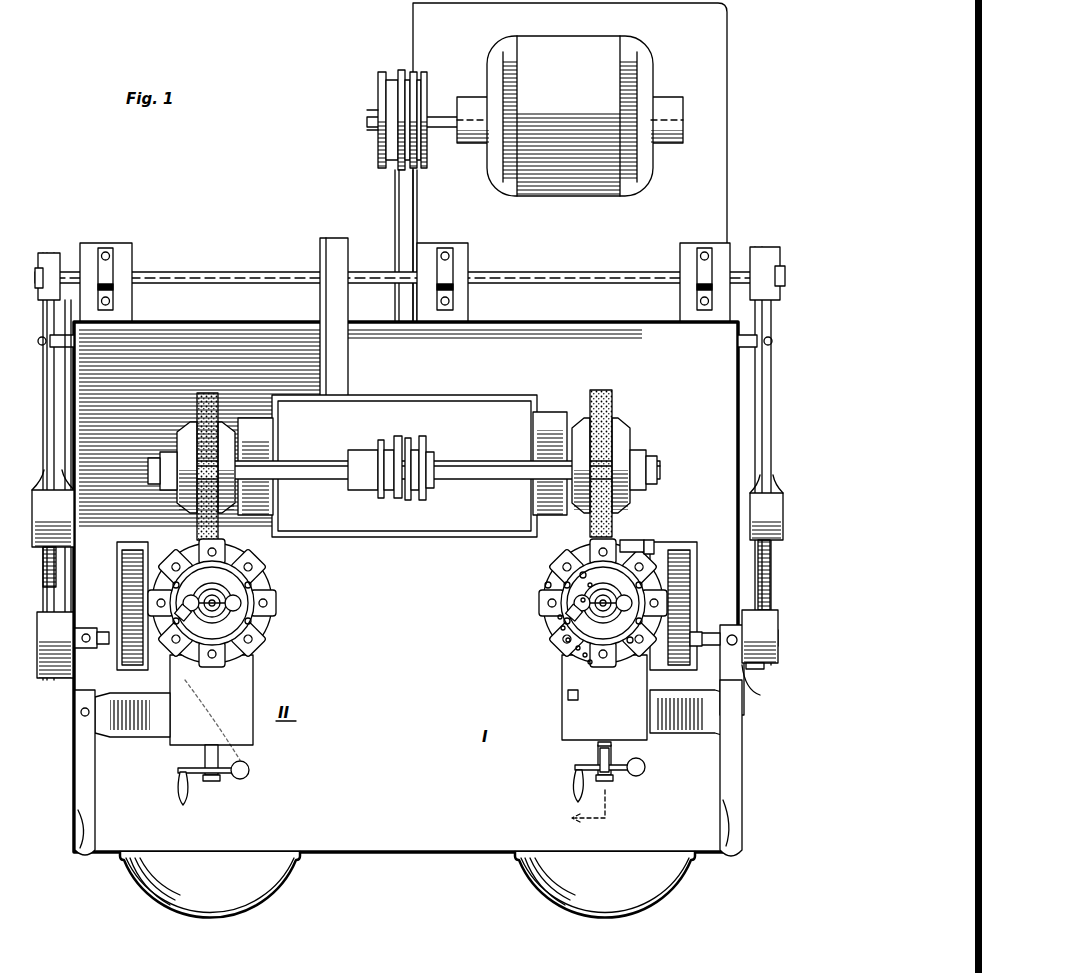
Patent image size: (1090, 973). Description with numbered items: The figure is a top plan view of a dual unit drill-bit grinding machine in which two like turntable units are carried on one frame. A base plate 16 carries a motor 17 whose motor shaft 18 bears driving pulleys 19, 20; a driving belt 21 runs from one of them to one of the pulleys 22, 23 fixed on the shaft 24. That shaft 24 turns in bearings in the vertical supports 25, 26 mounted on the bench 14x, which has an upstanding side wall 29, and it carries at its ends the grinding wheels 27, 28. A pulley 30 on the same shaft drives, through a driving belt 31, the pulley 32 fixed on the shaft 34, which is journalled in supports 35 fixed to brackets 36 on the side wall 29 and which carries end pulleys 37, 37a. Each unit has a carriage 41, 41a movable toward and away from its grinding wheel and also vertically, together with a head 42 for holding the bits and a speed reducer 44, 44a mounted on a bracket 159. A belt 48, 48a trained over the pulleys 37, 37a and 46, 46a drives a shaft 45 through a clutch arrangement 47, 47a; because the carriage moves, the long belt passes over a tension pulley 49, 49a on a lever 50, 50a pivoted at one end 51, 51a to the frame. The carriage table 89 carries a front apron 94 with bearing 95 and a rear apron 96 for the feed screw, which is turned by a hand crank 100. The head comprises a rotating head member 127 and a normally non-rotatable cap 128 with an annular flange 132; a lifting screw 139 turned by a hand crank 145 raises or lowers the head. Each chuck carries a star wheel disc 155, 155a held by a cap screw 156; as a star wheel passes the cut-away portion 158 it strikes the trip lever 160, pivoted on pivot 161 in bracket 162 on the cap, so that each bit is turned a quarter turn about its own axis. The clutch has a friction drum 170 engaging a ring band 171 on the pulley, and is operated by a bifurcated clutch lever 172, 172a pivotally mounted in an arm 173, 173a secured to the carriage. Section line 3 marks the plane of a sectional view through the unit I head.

The base plate 16 is at (708, 58).
The motor 17 is at (570, 116).
The motor shaft 18 is at (436, 115).
The driving pulley 19 is at (378, 76).
The driving pulley 20 is at (413, 72).
The driving belt 21 is at (395, 214).
The pulley 22 is at (396, 438).
The pulley 23 is at (424, 438).
The shaft 24 is at (470, 455).
The vertical support 25 is at (547, 410).
The vertical support 26 is at (255, 466).
The grinding wheel 27 is at (604, 390).
The grinding wheel 28 is at (197, 526).
The side wall 29 is at (74, 404).
The pulley 30 is at (340, 450).
The driving belt 31 is at (335, 421).
The pulley 32 is at (320, 246).
The shaft 34 is at (180, 272).
The support 35 is at (110, 262).
The bracket 36 is at (132, 248).
The pulley 37 is at (768, 252).
The pulley 37a is at (38, 254).
The carriage 41 is at (560, 720).
The carriage 41a is at (258, 670).
The turntable head 42 is at (588, 584).
The speed reducer 44 is at (680, 550).
The speed reducer 44a is at (130, 550).
The shaft 45 is at (700, 648).
The pulley 46 is at (768, 612).
The pulley 46a is at (43, 620).
The clutch arrangement 47 is at (730, 620).
The clutch arrangement 47a is at (84, 624).
The belt 48 is at (758, 343).
The belt 48a is at (43, 318).
The belt tension pulley 49 is at (785, 553).
The belt tension pulley 49a is at (43, 572).
The lever 50 is at (778, 495).
The lever 50a is at (43, 500).
The pivot end 51 is at (745, 347).
The pivot end 51a is at (60, 347).
The carriage table 89 is at (566, 694).
The apron 94 is at (596, 742).
The bearing 95 is at (598, 752).
The apron 96 is at (630, 545).
The hand crank 100 is at (572, 790).
The rotating head member 127 is at (546, 585).
The cap member 128 is at (580, 572).
The annular flange 132 is at (630, 646).
The lifting screw 139 is at (558, 617).
The hand crank 145 is at (580, 600).
The star wheel disc 155 is at (602, 660).
The star wheel disc 155a is at (258, 556).
The cap screw 156 is at (566, 640).
The cut-away portion 158 is at (588, 664).
The bracket 159 is at (650, 548).
The lever 160 is at (583, 656).
The pivot 161 is at (561, 628).
The bracket 162 is at (576, 648).
The friction drum 170 is at (760, 695).
The ring band 171 is at (757, 680).
The clutch lever 172 is at (720, 780).
The clutch lever 172a is at (75, 774).
The arm 173 is at (672, 737).
The arm 173a is at (115, 737).
The bench 14x is at (336, 852).
The section line 3 is at (580, 526).